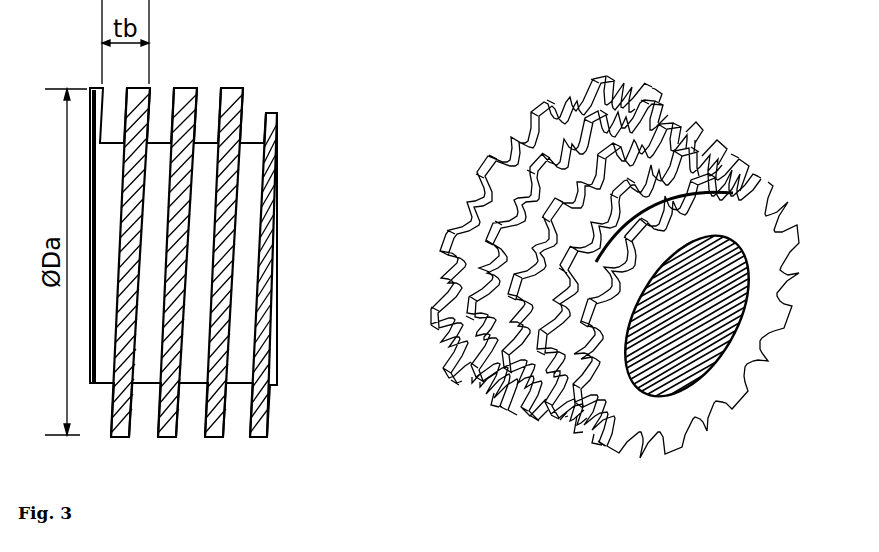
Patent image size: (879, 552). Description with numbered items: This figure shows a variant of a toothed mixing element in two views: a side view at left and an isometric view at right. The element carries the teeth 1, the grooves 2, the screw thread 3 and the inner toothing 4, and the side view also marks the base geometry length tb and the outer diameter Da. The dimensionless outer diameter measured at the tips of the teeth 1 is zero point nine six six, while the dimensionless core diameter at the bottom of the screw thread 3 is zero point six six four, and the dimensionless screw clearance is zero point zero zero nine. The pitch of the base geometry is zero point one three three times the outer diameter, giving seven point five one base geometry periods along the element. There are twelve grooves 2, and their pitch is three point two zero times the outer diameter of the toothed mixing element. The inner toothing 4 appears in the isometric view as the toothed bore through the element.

The teeth 1 is at (470, 300).
The grooves 2 is at (485, 270).
The screw thread 3 is at (255, 143).
The inner toothing 4 is at (727, 310).